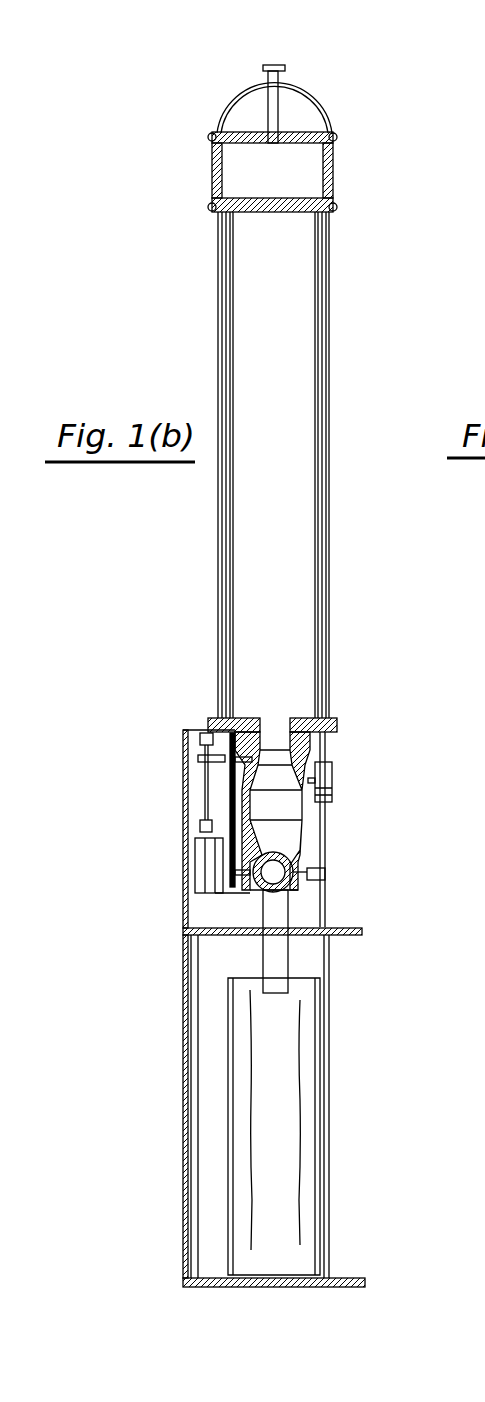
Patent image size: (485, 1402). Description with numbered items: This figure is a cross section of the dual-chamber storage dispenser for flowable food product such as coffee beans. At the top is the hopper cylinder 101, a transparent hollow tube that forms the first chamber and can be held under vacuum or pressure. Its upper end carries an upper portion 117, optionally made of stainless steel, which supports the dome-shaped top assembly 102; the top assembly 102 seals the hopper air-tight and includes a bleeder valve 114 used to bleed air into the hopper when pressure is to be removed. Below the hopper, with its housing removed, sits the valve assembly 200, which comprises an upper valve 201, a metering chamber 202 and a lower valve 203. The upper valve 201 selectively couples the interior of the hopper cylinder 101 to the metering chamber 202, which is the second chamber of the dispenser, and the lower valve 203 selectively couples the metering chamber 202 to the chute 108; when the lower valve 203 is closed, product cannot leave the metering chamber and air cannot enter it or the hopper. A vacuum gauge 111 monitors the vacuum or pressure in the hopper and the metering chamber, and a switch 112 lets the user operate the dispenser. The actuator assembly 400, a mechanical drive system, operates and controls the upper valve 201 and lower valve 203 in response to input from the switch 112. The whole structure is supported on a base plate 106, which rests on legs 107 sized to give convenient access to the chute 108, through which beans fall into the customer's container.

The hopper cylinder 101 is at (303, 325).
The top assembly 102 is at (345, 105).
The base plate 106 is at (180, 933).
The legs 107 is at (325, 1050).
The chute 108 is at (277, 955).
The vacuum gauge 111 is at (332, 773).
The switch 112 is at (325, 872).
The bleeder valve 114 is at (285, 72).
The upper portion 117 is at (200, 137).
The valve assembly 200 is at (356, 792).
The upper valve 201 is at (162, 762).
The metering chamber 202 is at (290, 818).
The lower valve 203 is at (162, 866).
The actuator assembly 400 is at (197, 712).